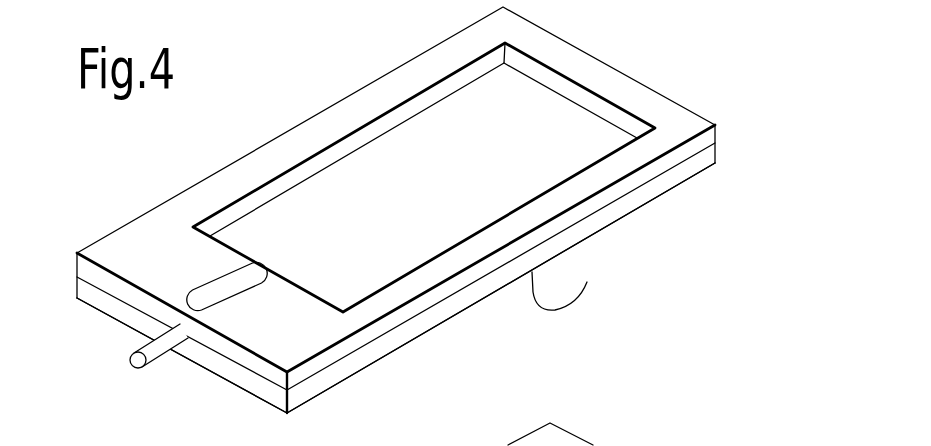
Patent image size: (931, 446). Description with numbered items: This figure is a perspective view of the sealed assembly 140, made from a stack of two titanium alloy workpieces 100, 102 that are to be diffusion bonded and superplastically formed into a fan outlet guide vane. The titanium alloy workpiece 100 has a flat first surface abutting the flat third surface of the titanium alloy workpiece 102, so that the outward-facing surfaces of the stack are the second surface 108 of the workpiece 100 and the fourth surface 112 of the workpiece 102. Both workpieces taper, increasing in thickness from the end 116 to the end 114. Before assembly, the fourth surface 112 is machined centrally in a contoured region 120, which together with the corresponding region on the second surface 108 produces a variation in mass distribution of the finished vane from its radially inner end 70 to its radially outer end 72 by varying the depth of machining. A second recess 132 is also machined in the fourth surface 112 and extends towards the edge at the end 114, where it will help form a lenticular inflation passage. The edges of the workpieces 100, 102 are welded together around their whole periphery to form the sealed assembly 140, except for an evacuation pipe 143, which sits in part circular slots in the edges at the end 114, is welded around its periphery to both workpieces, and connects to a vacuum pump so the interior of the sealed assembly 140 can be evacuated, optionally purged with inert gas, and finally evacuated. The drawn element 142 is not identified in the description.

The sealed assembly 140 is at (426, 225).
The fourth surface 112 is at (655, 101).
The titanium alloy workpiece 102 is at (693, 125).
The radially inner end 70 is at (718, 134).
The end 116 is at (718, 153).
The titanium alloy workpiece 100 is at (680, 175).
The region 120 is at (388, 158).
The second recess 132 is at (232, 282).
The evacuation pipe 143 is at (147, 350).
The second surface 108 is at (572, 282).
The radially outer end 72 is at (258, 396).
The end 114 is at (295, 400).
The element 142 is at (762, 443).